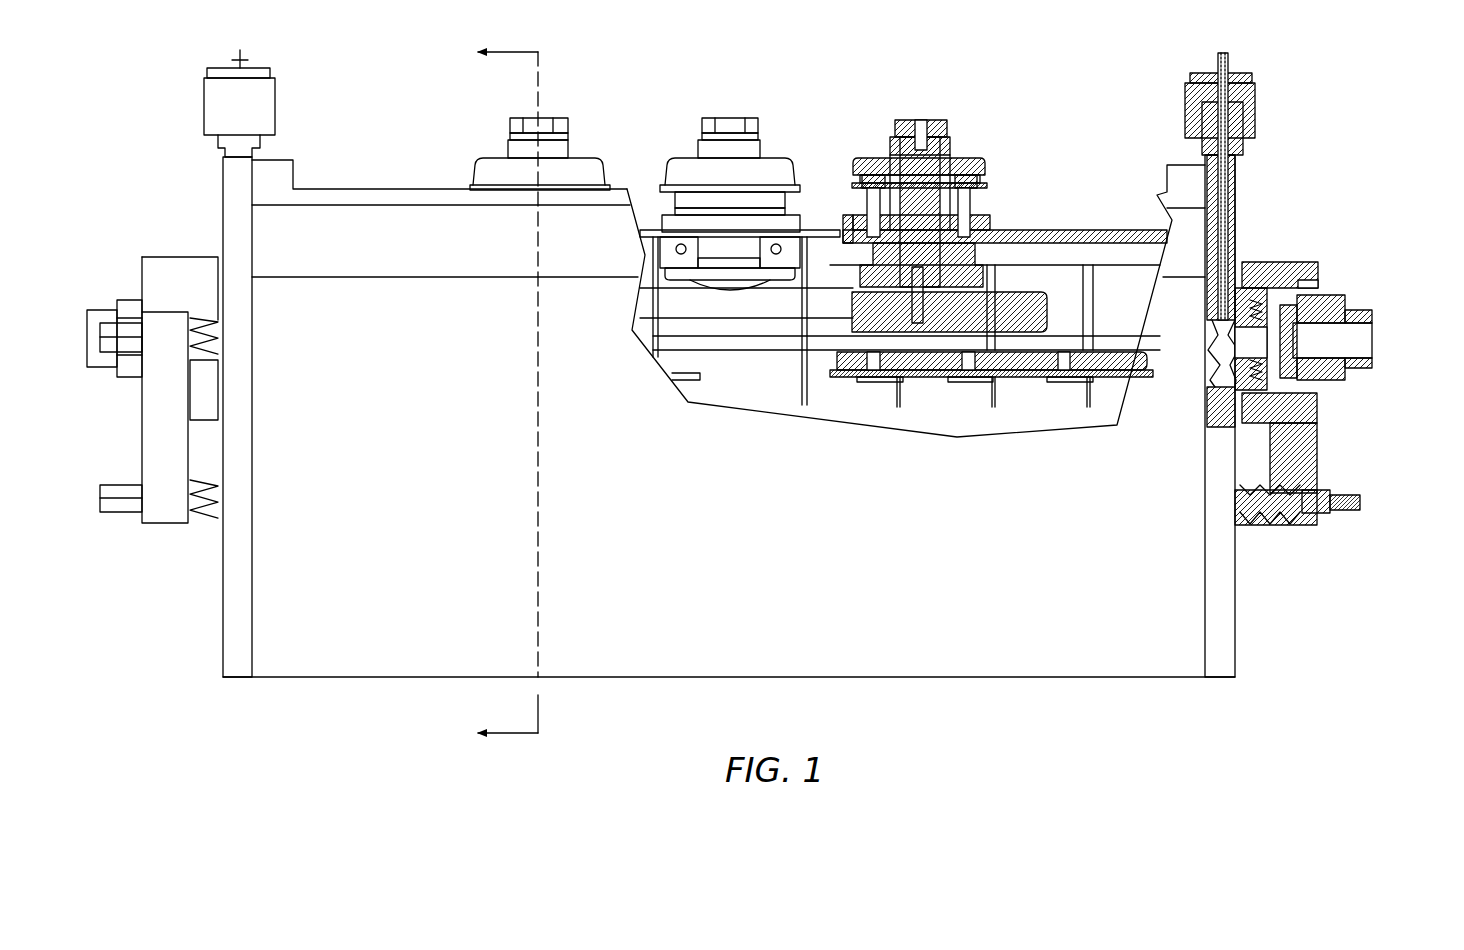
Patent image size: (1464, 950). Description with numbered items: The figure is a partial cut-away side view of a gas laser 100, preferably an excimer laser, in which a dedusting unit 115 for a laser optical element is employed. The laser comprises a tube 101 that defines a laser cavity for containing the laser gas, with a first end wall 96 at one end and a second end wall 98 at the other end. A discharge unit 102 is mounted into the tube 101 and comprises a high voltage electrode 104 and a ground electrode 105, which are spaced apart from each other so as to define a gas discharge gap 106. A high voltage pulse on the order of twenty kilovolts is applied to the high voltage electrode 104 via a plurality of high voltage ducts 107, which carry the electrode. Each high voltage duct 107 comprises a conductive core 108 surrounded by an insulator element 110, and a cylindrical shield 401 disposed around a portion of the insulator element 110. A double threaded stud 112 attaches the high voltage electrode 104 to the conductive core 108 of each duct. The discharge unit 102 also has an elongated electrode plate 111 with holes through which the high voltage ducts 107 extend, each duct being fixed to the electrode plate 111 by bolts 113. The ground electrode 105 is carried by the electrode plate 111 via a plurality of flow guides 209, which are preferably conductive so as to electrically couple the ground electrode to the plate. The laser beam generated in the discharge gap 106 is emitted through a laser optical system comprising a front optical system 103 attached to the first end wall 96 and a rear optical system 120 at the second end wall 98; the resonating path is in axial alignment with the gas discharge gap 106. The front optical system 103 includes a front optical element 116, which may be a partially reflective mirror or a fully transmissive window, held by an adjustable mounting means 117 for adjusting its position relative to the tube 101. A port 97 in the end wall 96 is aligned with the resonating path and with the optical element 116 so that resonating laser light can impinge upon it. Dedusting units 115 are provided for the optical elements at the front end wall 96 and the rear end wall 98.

The gas laser 100 is at (763, 389).
The tube 101 is at (410, 477).
The discharge unit 102 is at (648, 150).
The front optical system 103 is at (1341, 326).
The high voltage electrode 104 is at (1025, 340).
The ground electrode 105 is at (1105, 356).
The gas discharge gap 106 is at (1088, 300).
The high voltage duct 107 is at (678, 158).
The conductive core 108 is at (921, 120).
The insulator element 110 is at (873, 200).
The electrode plate 111 is at (1150, 228).
The double threaded stud 112 is at (980, 280).
The bolts 113 is at (862, 187).
The dedusting unit 115 is at (265, 78).
The front optical element 116 is at (1293, 338).
The adjustable mounting means 117 is at (142, 460).
The rear optical system 120 is at (178, 253).
The first end wall 96 is at (1215, 588).
The port 97 is at (1208, 372).
The second end wall 98 is at (232, 593).
The flow guides 209 is at (800, 343).
The cylindrical shield 401 is at (888, 160).